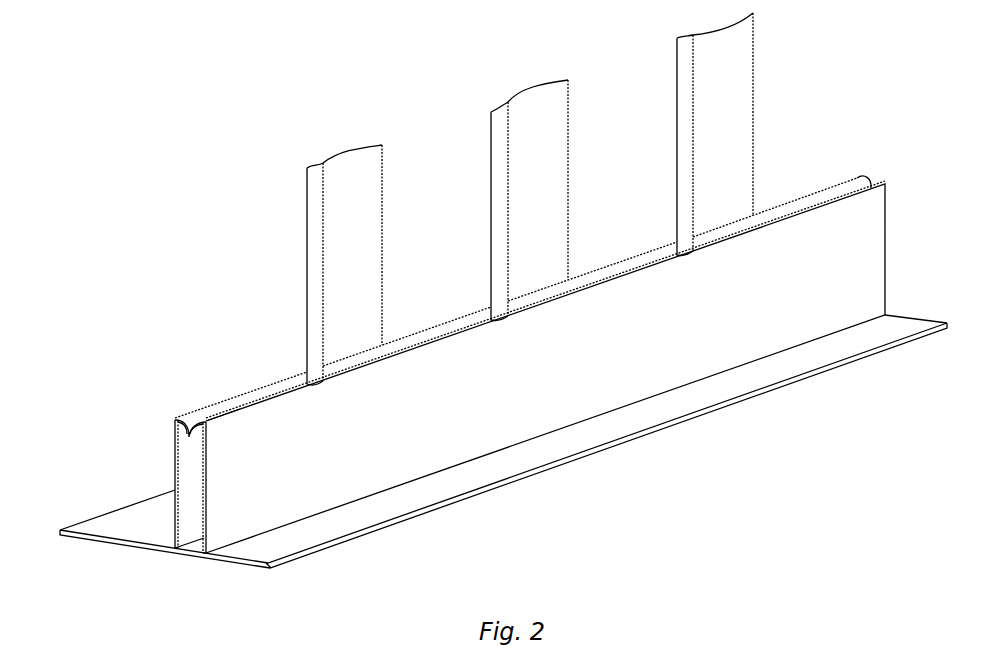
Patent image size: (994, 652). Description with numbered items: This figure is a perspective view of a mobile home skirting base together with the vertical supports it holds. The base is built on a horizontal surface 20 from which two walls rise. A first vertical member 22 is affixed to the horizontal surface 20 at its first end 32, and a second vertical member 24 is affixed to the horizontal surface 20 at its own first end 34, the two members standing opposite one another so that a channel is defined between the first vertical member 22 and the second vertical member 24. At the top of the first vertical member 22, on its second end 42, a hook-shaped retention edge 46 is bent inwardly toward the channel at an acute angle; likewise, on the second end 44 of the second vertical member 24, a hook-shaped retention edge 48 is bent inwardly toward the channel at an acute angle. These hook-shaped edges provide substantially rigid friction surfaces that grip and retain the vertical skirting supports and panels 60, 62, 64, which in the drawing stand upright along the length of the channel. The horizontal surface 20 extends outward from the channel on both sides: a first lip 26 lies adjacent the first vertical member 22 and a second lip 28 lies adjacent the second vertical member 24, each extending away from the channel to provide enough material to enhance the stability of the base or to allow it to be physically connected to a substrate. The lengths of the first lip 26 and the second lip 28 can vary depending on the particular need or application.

The horizontal surface 20 is at (248, 568).
The first vertical member 22 is at (462, 410).
The second vertical member 24 is at (174, 473).
The first lip 26 is at (298, 541).
The second lip 28 is at (120, 533).
The first end of the first vertical member 32 is at (208, 552).
The first end of the second vertical member 34 is at (175, 547).
The second end of the first vertical member 42 is at (207, 422).
The second end of the second vertical member 44 is at (175, 417).
The hook-shaped retention edge 46 is at (201, 425).
The hook-shaped retention edge 48 is at (188, 435).
The vertical skirting support 60 is at (342, 273).
The vertical skirting support 62 is at (527, 213).
The vertical skirting support 64 is at (714, 149).